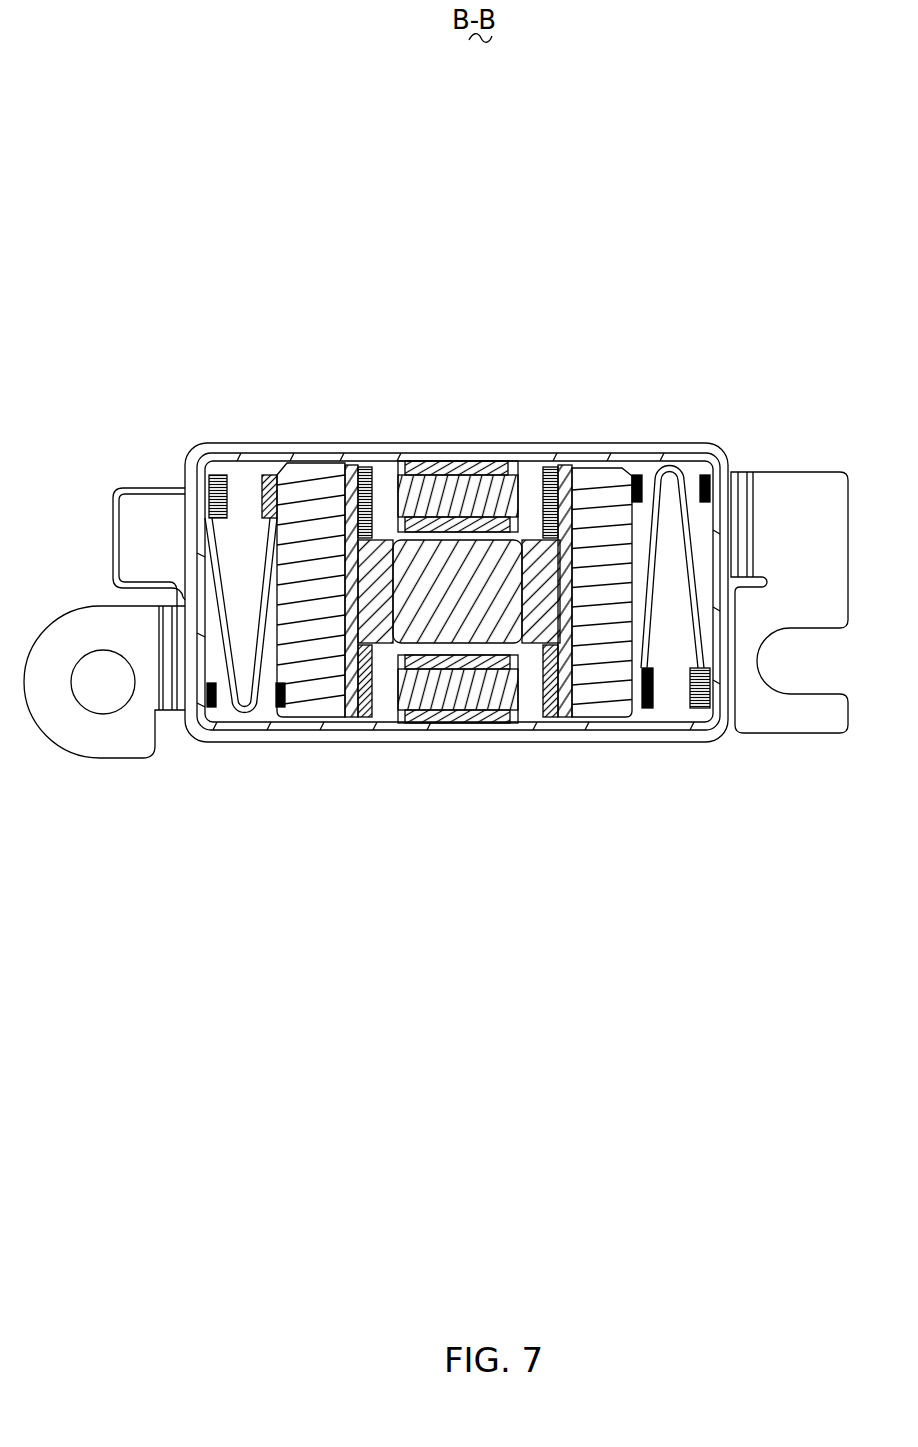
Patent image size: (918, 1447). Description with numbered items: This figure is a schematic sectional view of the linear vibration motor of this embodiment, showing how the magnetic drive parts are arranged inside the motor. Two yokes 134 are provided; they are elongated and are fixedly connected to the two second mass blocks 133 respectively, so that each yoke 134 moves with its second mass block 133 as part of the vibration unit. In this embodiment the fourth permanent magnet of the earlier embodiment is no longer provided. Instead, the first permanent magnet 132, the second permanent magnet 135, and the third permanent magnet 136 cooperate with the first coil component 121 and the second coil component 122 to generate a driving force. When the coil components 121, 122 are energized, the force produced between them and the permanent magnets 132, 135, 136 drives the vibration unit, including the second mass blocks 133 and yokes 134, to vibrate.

The first coil component 121 is at (497, 475).
The second coil component 122 is at (432, 698).
The first permanent magnet 132 is at (440, 618).
The second mass block 133 is at (612, 695).
The yoke 134 is at (565, 705).
The second permanent magnet 135 is at (367, 483).
The third permanent magnet 136 is at (378, 700).